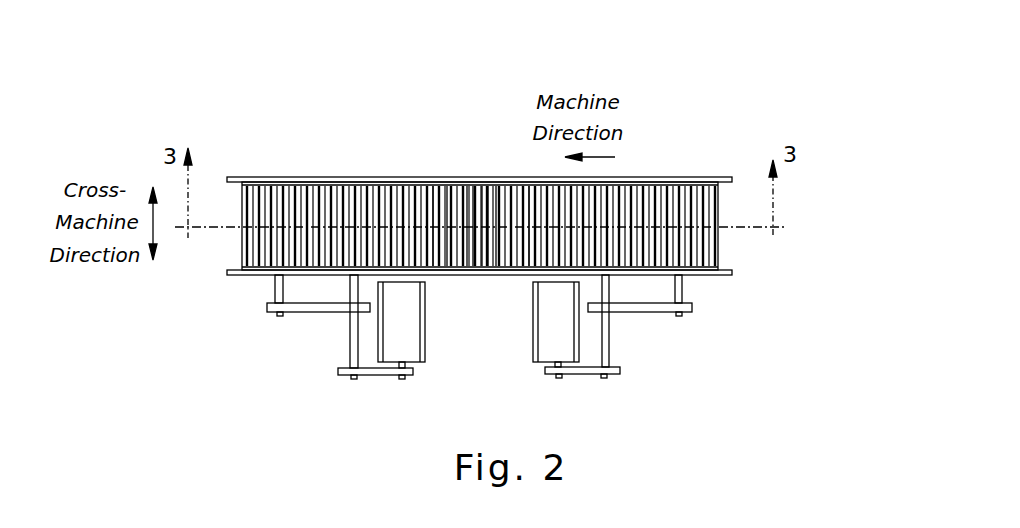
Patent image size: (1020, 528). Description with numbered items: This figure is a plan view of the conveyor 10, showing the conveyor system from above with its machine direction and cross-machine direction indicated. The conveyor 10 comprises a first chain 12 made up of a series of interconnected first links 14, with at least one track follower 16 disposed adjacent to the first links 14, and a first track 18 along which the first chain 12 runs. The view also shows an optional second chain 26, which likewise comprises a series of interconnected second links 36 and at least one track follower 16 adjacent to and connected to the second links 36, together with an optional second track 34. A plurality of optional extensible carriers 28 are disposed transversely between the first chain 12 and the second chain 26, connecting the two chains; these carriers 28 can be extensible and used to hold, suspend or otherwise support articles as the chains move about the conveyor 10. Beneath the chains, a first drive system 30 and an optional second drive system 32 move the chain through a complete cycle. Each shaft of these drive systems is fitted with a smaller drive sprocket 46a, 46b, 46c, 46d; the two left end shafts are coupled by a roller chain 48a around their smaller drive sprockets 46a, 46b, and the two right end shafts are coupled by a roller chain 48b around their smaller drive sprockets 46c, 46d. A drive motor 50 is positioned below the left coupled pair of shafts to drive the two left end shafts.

The conveyor 10 is at (648, 140).
The first chain 12 is at (731, 262).
The first links 14 is at (447, 260).
The track follower 16 is at (488, 260).
The first track 18 is at (715, 275).
The second chain 26 is at (730, 190).
The extensible carriers 28 is at (529, 255).
The first drive system 30 is at (336, 394).
The second drive system 32 is at (680, 337).
The second track 34 is at (315, 166).
The second links 36 is at (482, 178).
The smaller drive sprocket 46a is at (268, 307).
The smaller drive sprocket 46b is at (345, 309).
The smaller drive sprocket 46c is at (692, 313).
The smaller drive sprocket 46d is at (617, 312).
The roller chain 48a is at (308, 308).
The roller chain 48b is at (642, 308).
The drive motor 50 is at (412, 330).